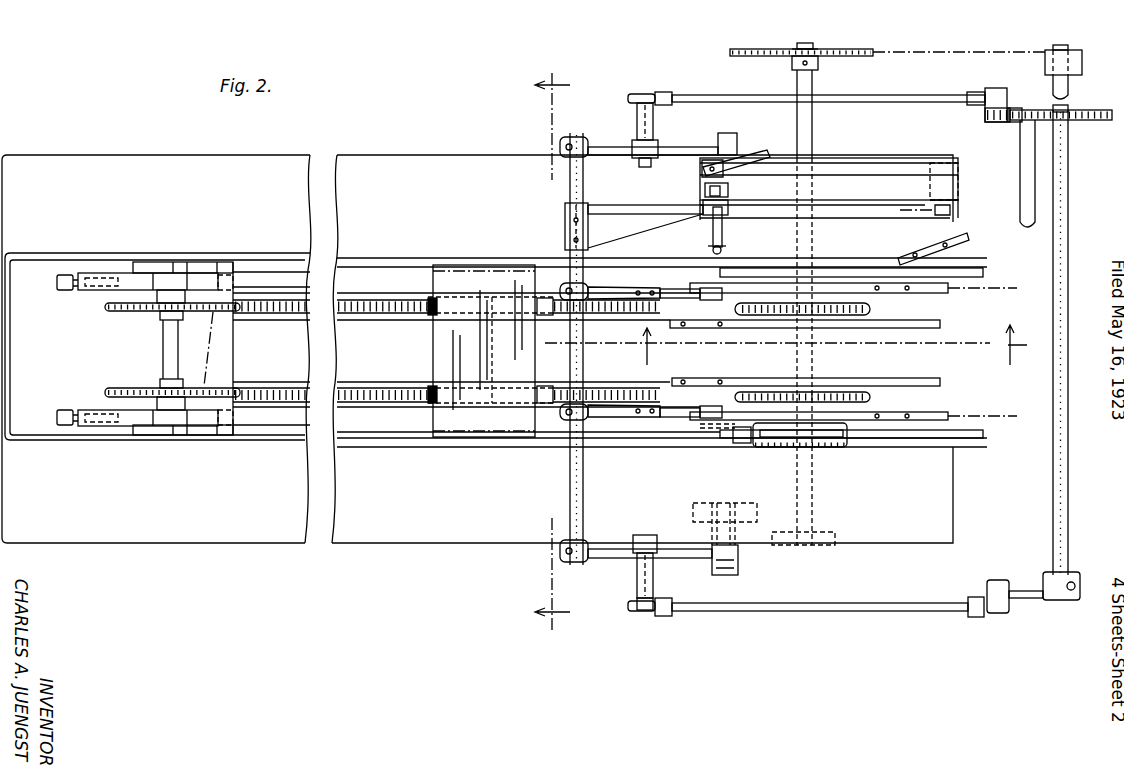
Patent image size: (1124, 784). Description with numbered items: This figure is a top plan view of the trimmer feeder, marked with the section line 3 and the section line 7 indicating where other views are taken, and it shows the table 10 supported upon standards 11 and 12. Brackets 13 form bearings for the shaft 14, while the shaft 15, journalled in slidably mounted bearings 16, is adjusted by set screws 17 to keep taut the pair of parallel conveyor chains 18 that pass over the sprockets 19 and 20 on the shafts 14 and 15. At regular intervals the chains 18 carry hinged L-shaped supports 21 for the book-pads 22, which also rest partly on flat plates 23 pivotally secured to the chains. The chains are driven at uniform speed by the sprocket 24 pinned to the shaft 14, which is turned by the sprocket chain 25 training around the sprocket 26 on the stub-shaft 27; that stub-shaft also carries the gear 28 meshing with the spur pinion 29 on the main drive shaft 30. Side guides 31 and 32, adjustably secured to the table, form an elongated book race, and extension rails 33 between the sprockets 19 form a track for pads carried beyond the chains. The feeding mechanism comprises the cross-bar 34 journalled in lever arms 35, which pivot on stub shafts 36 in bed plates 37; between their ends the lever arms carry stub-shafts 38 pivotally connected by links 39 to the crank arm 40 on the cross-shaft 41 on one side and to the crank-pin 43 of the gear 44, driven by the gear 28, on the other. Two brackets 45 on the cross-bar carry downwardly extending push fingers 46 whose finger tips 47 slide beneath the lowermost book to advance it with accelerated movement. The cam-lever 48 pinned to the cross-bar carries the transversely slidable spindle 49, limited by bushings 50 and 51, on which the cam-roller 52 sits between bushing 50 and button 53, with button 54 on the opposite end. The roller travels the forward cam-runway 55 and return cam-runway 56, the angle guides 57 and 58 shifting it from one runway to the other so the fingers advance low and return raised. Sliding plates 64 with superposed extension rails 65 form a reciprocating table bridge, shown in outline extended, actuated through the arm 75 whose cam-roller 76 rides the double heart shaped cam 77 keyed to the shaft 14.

The section line 3- 3 is at (540, 351).
The section line 7- 7 is at (786, 349).
The table 10 is at (365, 533).
The standard 11 is at (153, 437).
The standard 12 is at (158, 266).
The bracket 13 is at (830, 545).
The shaft 14 is at (812, 368).
The shaft 15 is at (165, 342).
The bearing 16 is at (90, 290).
The set screw 17 is at (57, 283).
The conveyor chain 18 is at (390, 388).
The sprocket 19 is at (873, 308).
The sprocket 20 is at (107, 308).
The L-shaped support 21 is at (428, 311).
The book-pad 22 is at (485, 372).
The flat plate 23 is at (547, 386).
The sprocket 24 is at (749, 49).
The sprocket chain 25 is at (918, 52).
The sprocket 26 is at (1085, 45).
The stub-shaft 27 is at (1068, 86).
The gear 28 is at (1095, 122).
The spur pinion 29 is at (1013, 124).
The main drive shaft 30 is at (1023, 195).
The side guide 31 is at (395, 267).
The side guide 32 is at (398, 442).
The extension rail 33 is at (940, 320).
The cross-bar 34 is at (570, 480).
The lever arm 35 is at (607, 152).
The stub shaft 36 is at (738, 565).
The bed plate 37 is at (693, 518).
The stub-shaft 38 is at (653, 124).
The link 39 is at (741, 100).
The crank arm 40 is at (1019, 592).
The cross-shaft 41 is at (1056, 275).
The crank-pin 43 is at (999, 90).
The gear 44 is at (985, 114).
The bracket 45 is at (603, 290).
The push finger 46 is at (694, 289).
The finger tip 47 is at (728, 290).
The cam-lever 48 is at (633, 232).
The spindle 49 is at (955, 188).
The bushing 50 is at (703, 205).
The bushing 51 is at (724, 247).
The cam-roller 52 is at (705, 187).
The button 53 is at (722, 186).
The button 54 is at (710, 246).
The forward cam-runway 55 is at (862, 193).
The return cam-runway 56 is at (862, 166).
The angle guide 57 is at (967, 240).
The angle guide 58 is at (745, 162).
The sliding plate 64 is at (863, 278).
The extension rail 65 is at (945, 290).
The arm 75 is at (702, 432).
The cam-roller 76 is at (745, 437).
The double heart shaped cam 77 is at (780, 437).